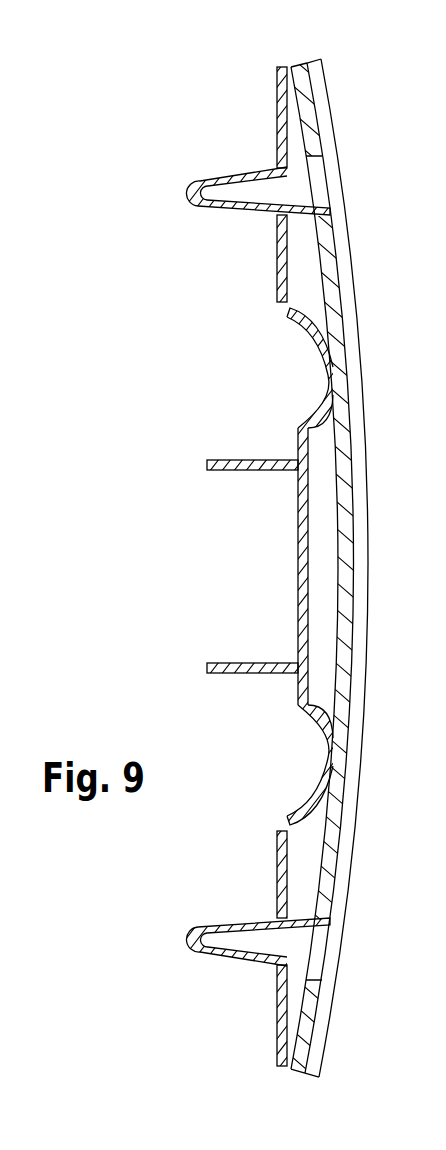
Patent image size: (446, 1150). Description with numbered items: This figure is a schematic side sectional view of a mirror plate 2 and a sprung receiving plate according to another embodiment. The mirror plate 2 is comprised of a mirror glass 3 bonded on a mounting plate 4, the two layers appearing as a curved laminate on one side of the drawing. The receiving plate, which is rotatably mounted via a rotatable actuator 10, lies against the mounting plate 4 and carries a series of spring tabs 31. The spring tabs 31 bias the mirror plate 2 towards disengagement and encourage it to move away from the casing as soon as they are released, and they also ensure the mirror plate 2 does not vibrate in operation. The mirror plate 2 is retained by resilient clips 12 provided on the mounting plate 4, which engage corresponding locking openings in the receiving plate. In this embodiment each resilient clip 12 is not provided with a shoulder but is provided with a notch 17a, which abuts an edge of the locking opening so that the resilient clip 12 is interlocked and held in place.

The mirror plate 2 is at (332, 50).
The mirror glass 3 is at (355, 380).
The mounting plate 4 is at (347, 481).
The rotatable actuator 10 is at (255, 573).
The resilient clip 12 is at (222, 204).
The notch 17a is at (278, 164).
The spring tab 31 is at (318, 336).